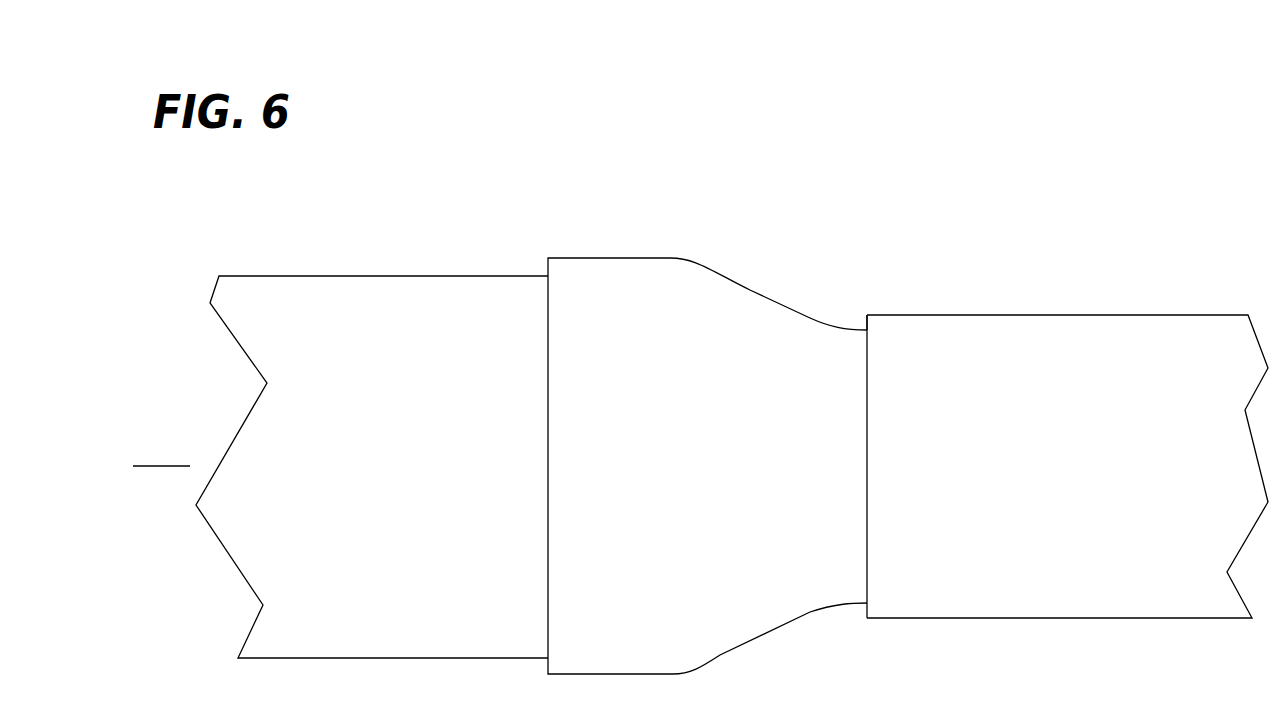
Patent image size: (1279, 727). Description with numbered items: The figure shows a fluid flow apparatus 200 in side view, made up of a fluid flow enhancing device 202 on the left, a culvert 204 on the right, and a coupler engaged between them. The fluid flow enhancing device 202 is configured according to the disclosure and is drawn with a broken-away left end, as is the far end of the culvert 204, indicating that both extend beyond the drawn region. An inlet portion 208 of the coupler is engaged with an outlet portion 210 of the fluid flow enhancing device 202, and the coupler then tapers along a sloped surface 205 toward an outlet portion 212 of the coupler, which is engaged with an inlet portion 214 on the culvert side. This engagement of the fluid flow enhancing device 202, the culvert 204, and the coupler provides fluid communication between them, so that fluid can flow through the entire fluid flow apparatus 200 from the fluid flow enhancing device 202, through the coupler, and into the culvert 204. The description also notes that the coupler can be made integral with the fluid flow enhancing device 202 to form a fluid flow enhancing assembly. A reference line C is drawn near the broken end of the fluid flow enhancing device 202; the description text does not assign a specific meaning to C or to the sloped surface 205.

The fluid flow apparatus 200 is at (596, 162).
The fluid flow enhancing device 202 is at (388, 290).
The outlet portion 210 is at (522, 285).
The inlet portion 208 is at (616, 258).
The tapered surface 205 is at (738, 325).
The outlet portion 212 is at (848, 340).
The inlet portion 214 is at (905, 337).
The culvert 204 is at (1090, 315).
The reference line C is at (162, 466).